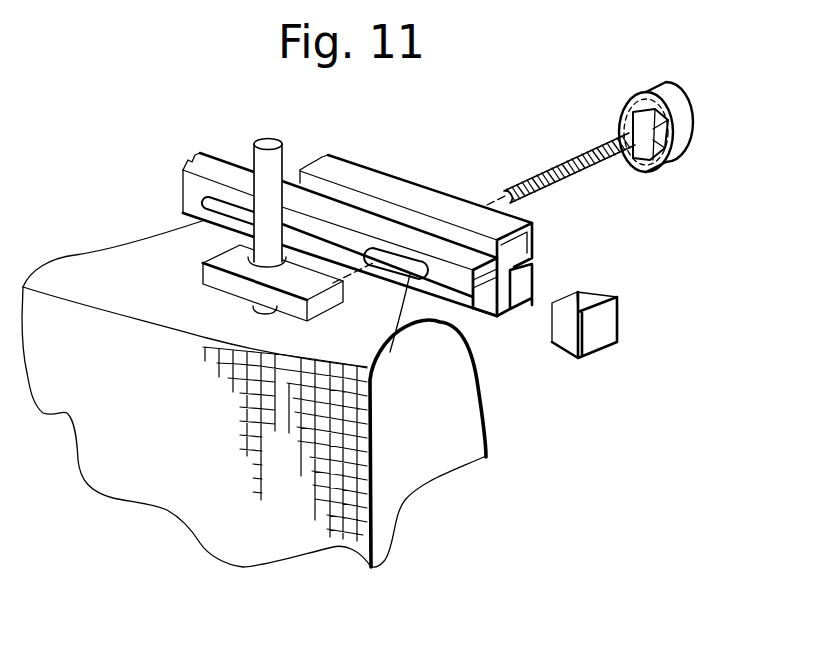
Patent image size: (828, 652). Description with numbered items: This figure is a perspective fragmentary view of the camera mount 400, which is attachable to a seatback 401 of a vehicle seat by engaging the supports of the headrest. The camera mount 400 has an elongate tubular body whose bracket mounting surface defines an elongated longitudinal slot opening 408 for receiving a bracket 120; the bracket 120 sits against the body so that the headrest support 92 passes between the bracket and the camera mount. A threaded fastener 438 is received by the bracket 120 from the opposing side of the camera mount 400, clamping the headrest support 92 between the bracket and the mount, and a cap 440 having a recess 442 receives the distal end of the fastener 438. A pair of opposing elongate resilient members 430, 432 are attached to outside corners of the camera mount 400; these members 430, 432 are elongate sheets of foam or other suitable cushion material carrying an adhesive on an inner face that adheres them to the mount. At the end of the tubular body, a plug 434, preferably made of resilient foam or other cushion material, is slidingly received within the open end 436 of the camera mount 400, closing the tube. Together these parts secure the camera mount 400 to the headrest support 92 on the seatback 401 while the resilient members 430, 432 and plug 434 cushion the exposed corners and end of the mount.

The headrest support 92 is at (256, 162).
The bracket 120 is at (202, 283).
The camera mount 400 is at (190, 201).
The seatback 401 is at (254, 393).
The opening 408 is at (410, 273).
The elongate resilient member 430 is at (510, 223).
The elongate resilient member 432 is at (525, 293).
The plug 434 is at (588, 325).
The open end 436 is at (500, 275).
The threaded fastener 438 is at (622, 134).
The cap 440 is at (655, 92).
The recess 442 is at (676, 110).